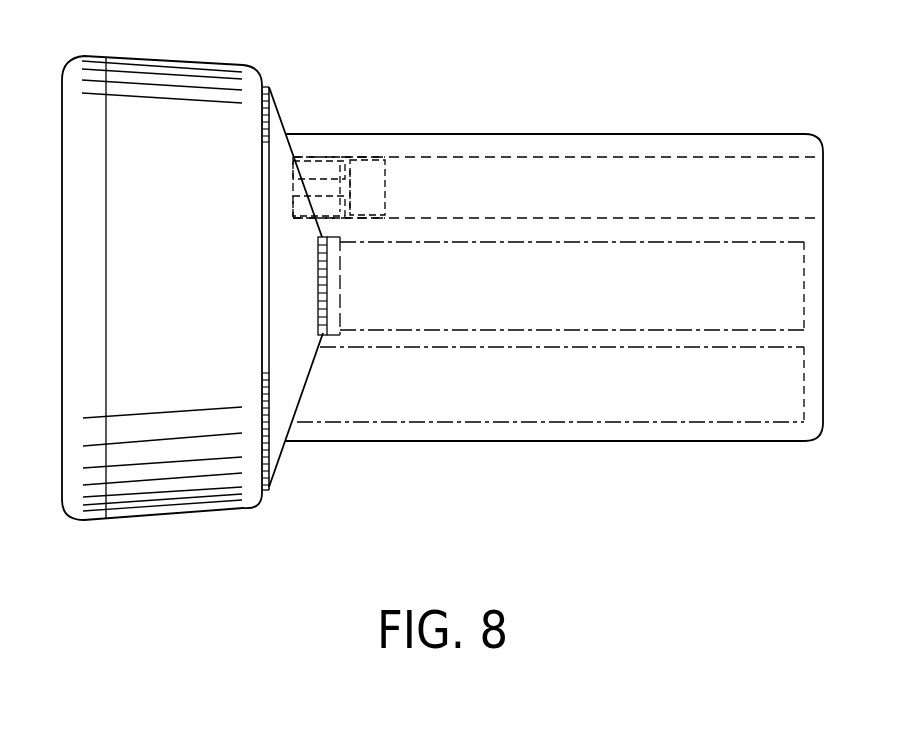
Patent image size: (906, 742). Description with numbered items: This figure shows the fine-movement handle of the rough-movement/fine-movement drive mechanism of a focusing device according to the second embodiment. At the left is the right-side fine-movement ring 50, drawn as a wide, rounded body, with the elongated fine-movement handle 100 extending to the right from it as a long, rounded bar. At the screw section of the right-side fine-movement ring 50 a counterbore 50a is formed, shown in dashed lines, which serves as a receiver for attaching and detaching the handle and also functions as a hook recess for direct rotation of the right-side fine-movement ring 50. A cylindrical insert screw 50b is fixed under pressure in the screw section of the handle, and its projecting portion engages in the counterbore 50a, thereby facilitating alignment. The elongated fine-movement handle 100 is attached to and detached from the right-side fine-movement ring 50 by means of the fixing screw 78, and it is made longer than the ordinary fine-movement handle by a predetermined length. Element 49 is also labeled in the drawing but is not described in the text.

The cap 49 is at (150, 512).
The right-side fine-movement ring 50 is at (277, 463).
The counterbore 50a is at (293, 197).
The insert screw 50b is at (318, 152).
The fixing screw 78 is at (370, 165).
The elongated fine-movement handle 100 is at (422, 441).